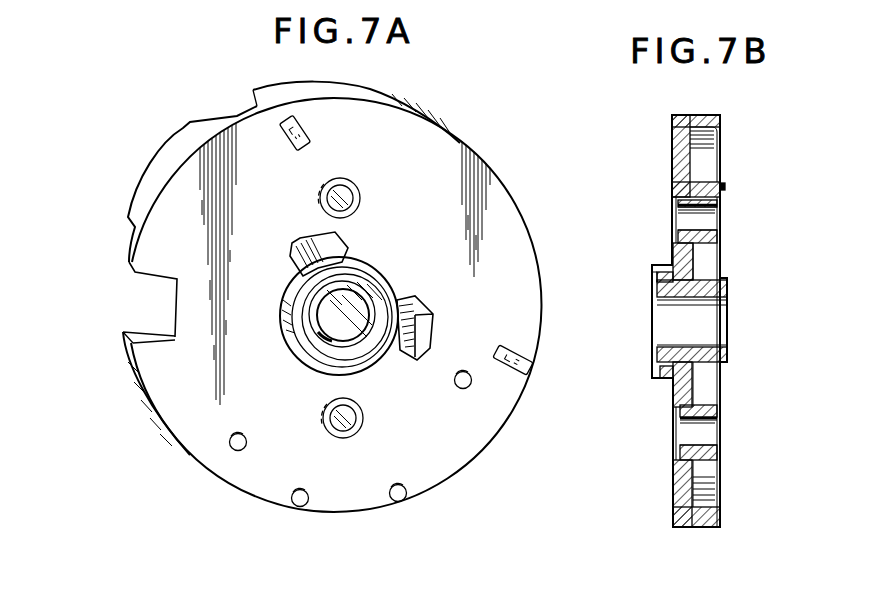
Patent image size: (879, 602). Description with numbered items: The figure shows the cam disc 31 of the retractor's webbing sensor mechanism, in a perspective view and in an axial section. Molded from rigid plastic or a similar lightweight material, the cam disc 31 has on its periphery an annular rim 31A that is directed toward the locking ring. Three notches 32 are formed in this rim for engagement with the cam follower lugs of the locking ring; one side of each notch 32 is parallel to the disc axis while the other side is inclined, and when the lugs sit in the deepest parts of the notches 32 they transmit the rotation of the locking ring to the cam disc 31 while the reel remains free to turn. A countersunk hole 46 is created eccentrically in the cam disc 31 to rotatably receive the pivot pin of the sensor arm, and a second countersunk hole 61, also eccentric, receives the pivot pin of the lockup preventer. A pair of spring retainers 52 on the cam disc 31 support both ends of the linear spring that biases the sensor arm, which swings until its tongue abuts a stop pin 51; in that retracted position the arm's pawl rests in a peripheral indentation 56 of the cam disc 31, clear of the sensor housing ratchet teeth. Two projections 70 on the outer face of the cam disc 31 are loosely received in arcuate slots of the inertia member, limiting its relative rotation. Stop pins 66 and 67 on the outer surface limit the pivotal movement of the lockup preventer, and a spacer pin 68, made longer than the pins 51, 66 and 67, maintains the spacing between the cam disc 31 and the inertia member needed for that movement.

In FIG. 7A, the cam disc 31 is at (464, 139).
In FIG. 7B, the cam disc 31 is at (724, 120).
In FIG. 7A, the annular rim 31A is at (167, 162).
In FIG. 7A, the notches 32 is at (252, 111).
In FIG. 7A, the countersunk hole 46 is at (355, 200).
In FIG. 7B, the countersunk hole 46 is at (705, 218).
In FIG. 7A, the stop pin 51 is at (461, 370).
In FIG. 7A, the spring retainers 52 is at (309, 134).
In FIG. 7A, the peripheral indentation 56 is at (166, 296).
In FIG. 7A, the countersunk hole 61 is at (358, 420).
In FIG. 7B, the countersunk hole 61 is at (706, 437).
In FIG. 7A, the stop pin 66 is at (297, 506).
In FIG. 7A, the stop pin 67 is at (400, 502).
In FIG. 7A, the spacer pin 68 is at (232, 449).
In FIG. 7A, the projections 70 is at (294, 249).